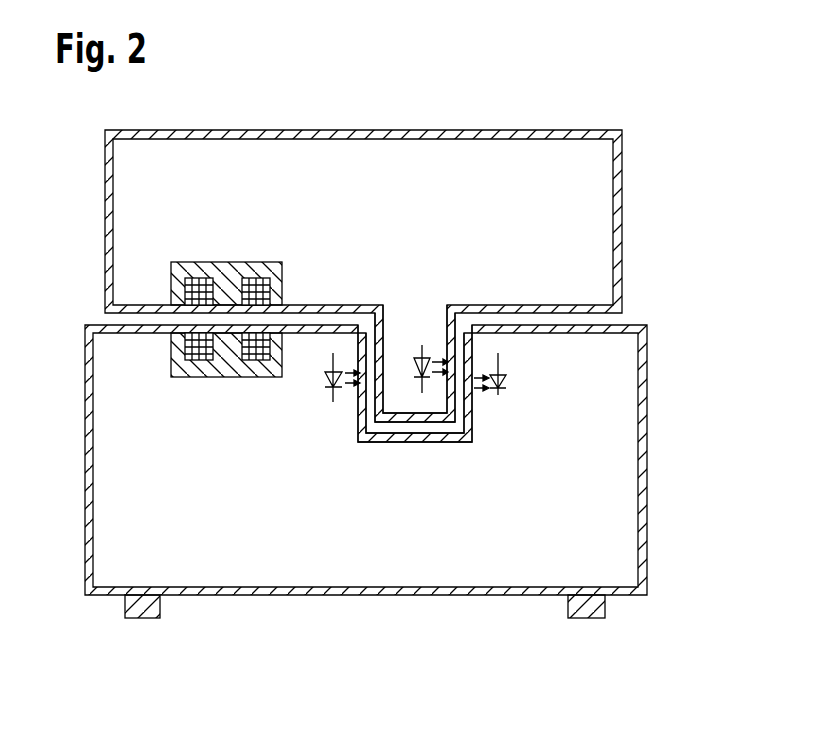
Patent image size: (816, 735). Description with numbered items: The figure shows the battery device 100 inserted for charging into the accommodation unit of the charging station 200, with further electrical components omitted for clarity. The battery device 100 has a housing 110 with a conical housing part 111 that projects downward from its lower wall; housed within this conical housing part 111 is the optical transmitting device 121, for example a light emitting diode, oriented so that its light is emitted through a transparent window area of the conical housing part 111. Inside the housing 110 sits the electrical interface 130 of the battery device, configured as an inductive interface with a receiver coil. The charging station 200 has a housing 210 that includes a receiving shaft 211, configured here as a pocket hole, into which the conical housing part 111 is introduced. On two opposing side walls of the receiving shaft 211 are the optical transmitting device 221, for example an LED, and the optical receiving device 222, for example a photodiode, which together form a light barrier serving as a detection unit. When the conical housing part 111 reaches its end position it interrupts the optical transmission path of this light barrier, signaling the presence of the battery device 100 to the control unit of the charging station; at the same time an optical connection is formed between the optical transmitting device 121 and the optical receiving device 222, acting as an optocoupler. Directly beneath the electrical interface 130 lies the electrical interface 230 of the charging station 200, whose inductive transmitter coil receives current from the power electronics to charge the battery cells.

The battery device 100 is at (404, 323).
The housing 110 is at (622, 280).
The conical housing part 111 is at (392, 421).
The optical transmitting device 121 is at (427, 355).
The electrical interface 130 is at (205, 272).
The charging station 200 is at (408, 512).
The housing 210 is at (647, 467).
The receiving shaft 211 is at (458, 428).
The optical transmitting device 221 is at (326, 381).
The optical receiving device 222 is at (506, 383).
The electrical interface 230 is at (204, 374).